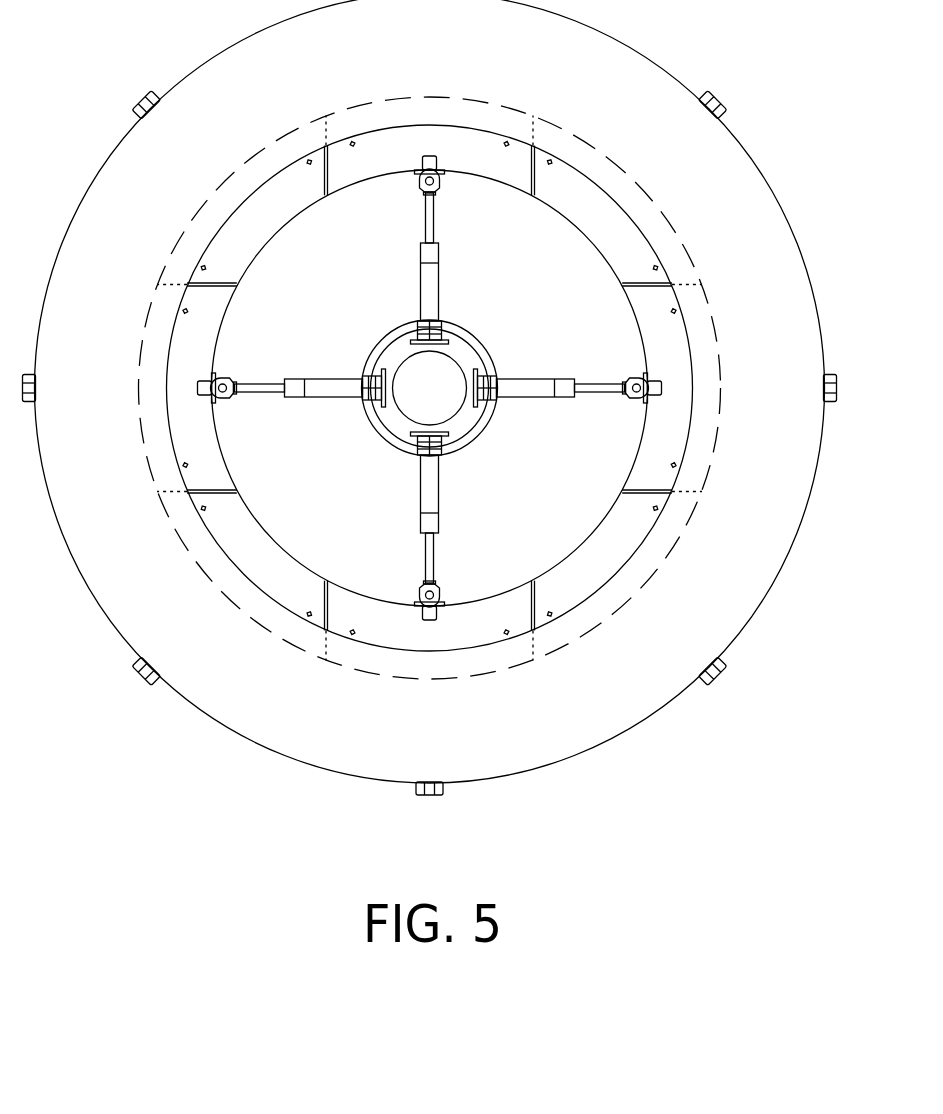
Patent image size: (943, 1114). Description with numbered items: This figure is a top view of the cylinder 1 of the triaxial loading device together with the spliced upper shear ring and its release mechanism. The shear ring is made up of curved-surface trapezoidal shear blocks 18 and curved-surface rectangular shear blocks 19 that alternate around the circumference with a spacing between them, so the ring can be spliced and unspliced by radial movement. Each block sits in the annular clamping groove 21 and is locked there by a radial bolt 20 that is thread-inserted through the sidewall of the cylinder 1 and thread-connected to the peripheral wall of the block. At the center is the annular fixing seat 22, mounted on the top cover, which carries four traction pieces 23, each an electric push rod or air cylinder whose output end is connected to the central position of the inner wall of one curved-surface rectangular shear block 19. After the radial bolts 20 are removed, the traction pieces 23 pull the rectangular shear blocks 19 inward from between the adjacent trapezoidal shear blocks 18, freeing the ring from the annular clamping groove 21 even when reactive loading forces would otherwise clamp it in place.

The cylinder 1 is at (767, 223).
The curved-surface trapezoidal shear block 18 is at (597, 550).
The curved-surface rectangular shear block 19 is at (373, 608).
The radial bolt 20 is at (160, 690).
The annular clamping groove 21 is at (562, 642).
The fixing seat 22 is at (468, 353).
The traction piece 23 is at (328, 385).